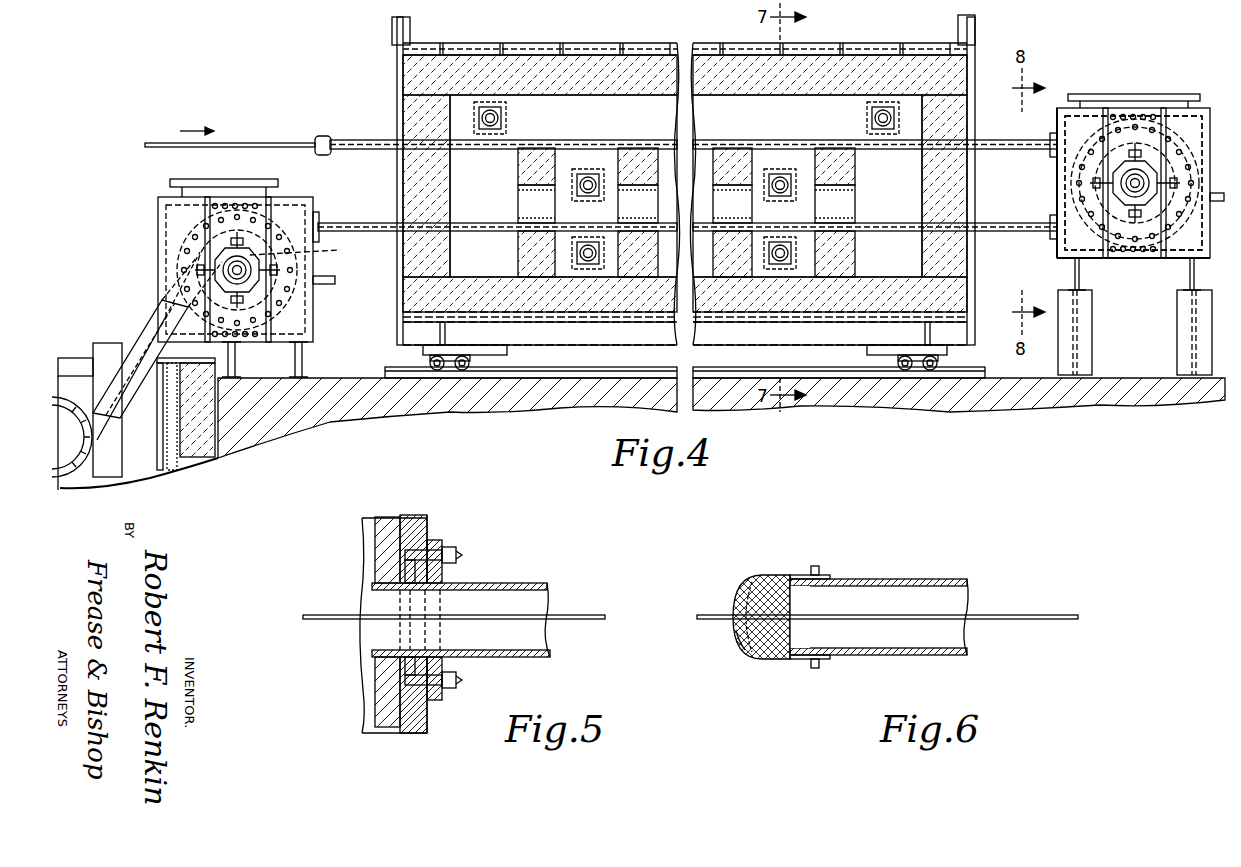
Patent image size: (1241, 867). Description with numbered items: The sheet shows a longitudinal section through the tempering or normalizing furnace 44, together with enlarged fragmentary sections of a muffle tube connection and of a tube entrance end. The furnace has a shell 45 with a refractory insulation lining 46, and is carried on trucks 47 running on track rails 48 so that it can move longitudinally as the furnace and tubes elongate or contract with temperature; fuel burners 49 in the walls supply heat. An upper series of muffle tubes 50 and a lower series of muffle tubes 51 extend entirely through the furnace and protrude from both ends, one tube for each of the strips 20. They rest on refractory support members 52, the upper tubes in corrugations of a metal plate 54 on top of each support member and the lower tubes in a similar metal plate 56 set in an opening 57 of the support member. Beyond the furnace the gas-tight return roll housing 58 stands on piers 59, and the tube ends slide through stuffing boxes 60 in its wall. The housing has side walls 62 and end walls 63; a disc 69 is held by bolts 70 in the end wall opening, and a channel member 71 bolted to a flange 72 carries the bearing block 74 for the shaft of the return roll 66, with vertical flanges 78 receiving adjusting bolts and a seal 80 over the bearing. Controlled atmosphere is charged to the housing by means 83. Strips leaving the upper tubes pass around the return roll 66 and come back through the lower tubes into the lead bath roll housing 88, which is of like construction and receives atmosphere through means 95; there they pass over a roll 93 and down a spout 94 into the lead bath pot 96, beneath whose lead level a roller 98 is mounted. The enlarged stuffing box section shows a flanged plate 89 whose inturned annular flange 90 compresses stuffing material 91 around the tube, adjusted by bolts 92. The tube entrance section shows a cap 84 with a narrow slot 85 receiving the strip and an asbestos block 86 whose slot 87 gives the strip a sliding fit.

In FIG. 4, the strips 20 is at (292, 141).
In FIG. 5, the strips 20 is at (575, 616).
In FIG. 6, the strips 20 is at (998, 616).
In FIG. 4, the tempering or normalizing furnace 44 is at (565, 39).
In FIG. 4, the shell 45 is at (397, 92).
In FIG. 4, the refractory insulation lining 46 is at (625, 80).
In FIG. 4, the trucks 47 is at (421, 351).
In FIG. 4, the track rails 48 is at (583, 369).
In FIG. 4, the fuel burners 49 is at (494, 118).
In FIG. 4, the upper muffle tubes 50 is at (360, 140).
In FIG. 6, the upper muffle tubes 50 is at (880, 580).
In FIG. 4, the lower muffle tubes 51 is at (360, 222).
In FIG. 5, the lower muffle tubes 51 is at (500, 583).
In FIG. 4, the refractory support members 52 is at (528, 252).
In FIG. 4, the metal plate 54 is at (540, 148).
In FIG. 4, the metal plate 56 is at (636, 222).
In FIG. 4, the opening 57 is at (533, 197).
In FIG. 4, the return roll housing 58 is at (1167, 259).
In FIG. 4, the piers 59 is at (1090, 320).
In FIG. 4, the stuffing boxes 60 is at (318, 211).
In FIG. 5, the stuffing boxes 60 is at (438, 700).
In FIG. 4, the side walls 62 is at (1060, 173).
In FIG. 4, the end walls 63 is at (1198, 130).
In FIG. 4, the return roll 66 is at (1088, 180).
In FIG. 4, the disc 69 is at (1172, 210).
In FIG. 4, the bolts 70 is at (1168, 226).
In FIG. 4, the channel member 71 is at (1118, 236).
In FIG. 4, the flange 72 is at (1162, 110).
In FIG. 4, the bearing block 74 is at (1150, 170).
In FIG. 4, the vertical flanges 78 is at (1106, 126).
In FIG. 5, the seal 80 is at (428, 516).
In FIG. 4, the atmosphere charging means 83 is at (1165, 185).
In FIG. 4, the caps 84 is at (322, 136).
In FIG. 6, the caps 84 is at (768, 575).
In FIG. 6, the narrow slots 85 is at (738, 606).
In FIG. 6, the block of asbestos 86 is at (750, 646).
In FIG. 6, the slot 87 is at (760, 590).
In FIG. 4, the lead bath roll housing 88 is at (158, 237).
In FIG. 5, the flanged plate 89 is at (442, 570).
In FIG. 5, the inturned annular flange 90 is at (428, 583).
In FIG. 5, the stuffing material 91 is at (395, 666).
In FIG. 5, the bolts 92 is at (458, 552).
In FIG. 4, the roll 93 is at (306, 250).
In FIG. 4, the spout 94 is at (142, 346).
In FIG. 4, the atmosphere charging means 95 is at (332, 284).
In FIG. 4, the lead bath pot 96 is at (72, 357).
In FIG. 4, the roller 98 is at (66, 472).